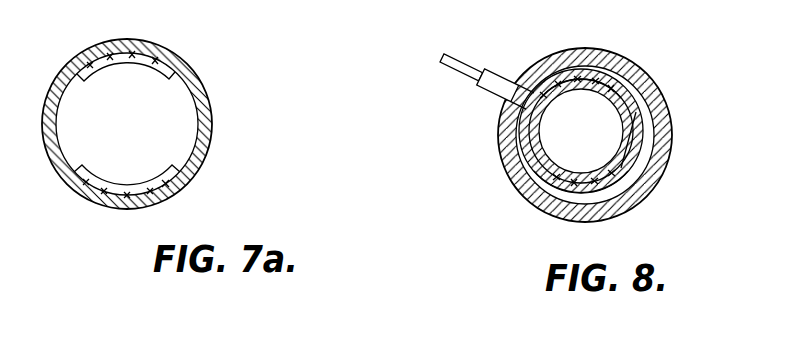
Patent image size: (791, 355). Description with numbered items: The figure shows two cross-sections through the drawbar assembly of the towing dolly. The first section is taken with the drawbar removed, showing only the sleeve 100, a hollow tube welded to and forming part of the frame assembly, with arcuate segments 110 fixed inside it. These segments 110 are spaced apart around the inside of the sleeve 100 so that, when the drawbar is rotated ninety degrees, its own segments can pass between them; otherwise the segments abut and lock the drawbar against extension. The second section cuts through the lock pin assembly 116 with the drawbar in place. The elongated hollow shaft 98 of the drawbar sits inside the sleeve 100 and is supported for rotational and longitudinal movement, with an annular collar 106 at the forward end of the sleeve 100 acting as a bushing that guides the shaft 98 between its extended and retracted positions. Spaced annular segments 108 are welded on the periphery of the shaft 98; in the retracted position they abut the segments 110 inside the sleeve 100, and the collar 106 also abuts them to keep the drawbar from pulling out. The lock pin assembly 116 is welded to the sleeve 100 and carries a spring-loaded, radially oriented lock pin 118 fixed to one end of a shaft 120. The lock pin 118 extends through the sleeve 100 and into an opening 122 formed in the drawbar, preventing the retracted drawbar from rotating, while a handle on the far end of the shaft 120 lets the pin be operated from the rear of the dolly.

In FIG. 7a, the sleeve 100 is at (191, 70).
In FIG. 8, the sleeve 100 is at (608, 53).
In FIG. 7a, the segments 110 is at (140, 61).
In FIG. 8, the shaft 98 is at (633, 110).
In FIG. 8, the annular collar 106 is at (518, 116).
In FIG. 8, the annular segments 108 is at (604, 198).
In FIG. 8, the lock pin assembly 116 is at (458, 110).
In FIG. 8, the lock pin 118 is at (530, 128).
In FIG. 8, the shaft 120 is at (452, 55).
In FIG. 8, the opening 122 is at (548, 110).